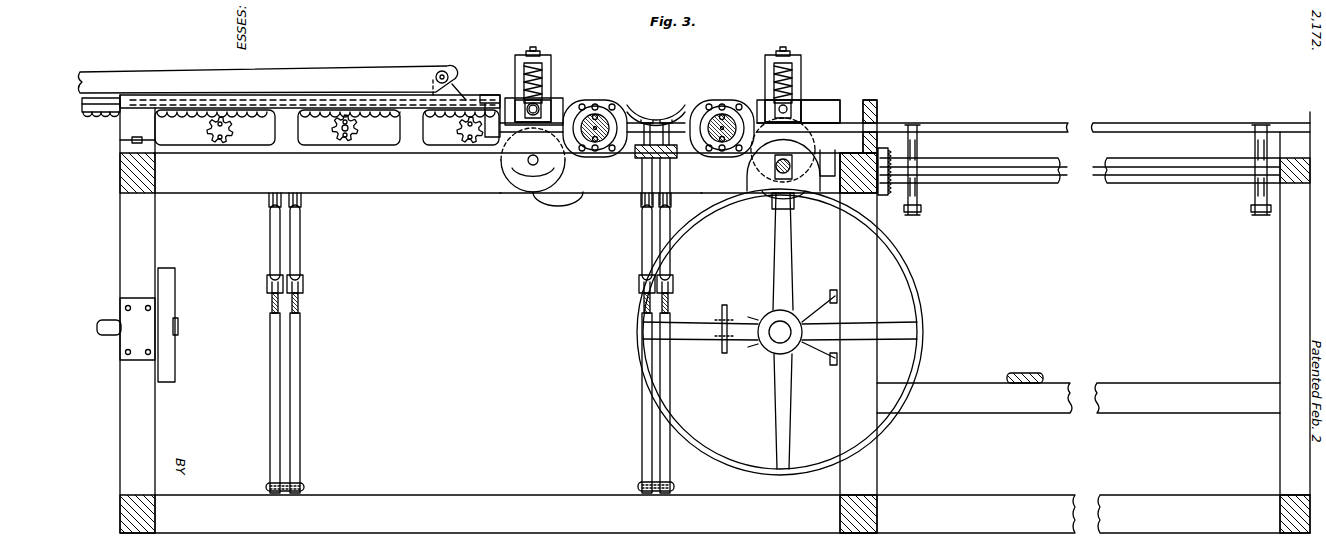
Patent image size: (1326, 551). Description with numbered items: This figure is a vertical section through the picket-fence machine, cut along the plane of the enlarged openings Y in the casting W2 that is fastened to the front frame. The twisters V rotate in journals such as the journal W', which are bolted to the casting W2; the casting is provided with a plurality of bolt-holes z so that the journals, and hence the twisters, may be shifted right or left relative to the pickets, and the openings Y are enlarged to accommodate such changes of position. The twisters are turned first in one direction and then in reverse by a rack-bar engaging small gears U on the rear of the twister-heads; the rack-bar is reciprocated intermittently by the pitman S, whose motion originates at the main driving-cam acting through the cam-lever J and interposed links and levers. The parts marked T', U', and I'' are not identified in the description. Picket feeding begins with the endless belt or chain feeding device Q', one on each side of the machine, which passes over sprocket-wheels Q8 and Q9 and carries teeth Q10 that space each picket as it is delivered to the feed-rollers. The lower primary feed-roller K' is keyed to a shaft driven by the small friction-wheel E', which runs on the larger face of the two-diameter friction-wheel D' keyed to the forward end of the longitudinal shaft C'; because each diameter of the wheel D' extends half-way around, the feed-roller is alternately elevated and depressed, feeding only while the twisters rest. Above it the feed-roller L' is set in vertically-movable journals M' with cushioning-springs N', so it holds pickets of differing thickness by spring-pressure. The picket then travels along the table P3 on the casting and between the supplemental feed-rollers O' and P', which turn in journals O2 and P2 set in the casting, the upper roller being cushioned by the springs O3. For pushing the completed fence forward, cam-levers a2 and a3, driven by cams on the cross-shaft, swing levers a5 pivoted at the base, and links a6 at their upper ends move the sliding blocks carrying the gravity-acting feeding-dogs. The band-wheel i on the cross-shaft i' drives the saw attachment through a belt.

The pitman S is at (272, 82).
The table end piece T' is at (101, 123).
The small gears U is at (327, 127).
The feed roller shaft U' is at (364, 131).
The cushioning-springs O3 is at (516, 72).
The journal O2 is at (525, 106).
The supplemental feed-roller O' is at (548, 97).
The cushioning-springs N' is at (795, 84).
The feed-roller L' is at (795, 133).
The vertically-movable journals M' is at (820, 111).
The bearing bracket I'' is at (822, 158).
The table P3 is at (858, 165).
The supplemental feed-roller P' is at (533, 160).
The journal P2 is at (505, 172).
The twisters V is at (607, 116).
The journal W' is at (661, 128).
The casting W2 is at (598, 145).
The openings Y is at (601, 127).
The bolt-holes z is at (655, 127).
The cam-lever J is at (700, 160).
The small friction-wheel E' is at (993, 276).
The feed-roller K' is at (794, 204).
The large friction-wheel D' is at (793, 332).
The longitudinal shaft C' is at (776, 327).
The teeth Q10 is at (918, 152).
The sprocket-wheel Q8 is at (920, 190).
The sprocket-wheel Q9 is at (1080, 205).
The endless belt or chain feeding device Q' is at (1074, 185).
The cross-shaft i' is at (126, 329).
The band-wheel i is at (173, 325).
The levers a5 is at (283, 343).
The cam-levers a2 is at (270, 304).
The cam-levers a3 is at (642, 302).
The links a6 is at (670, 356).